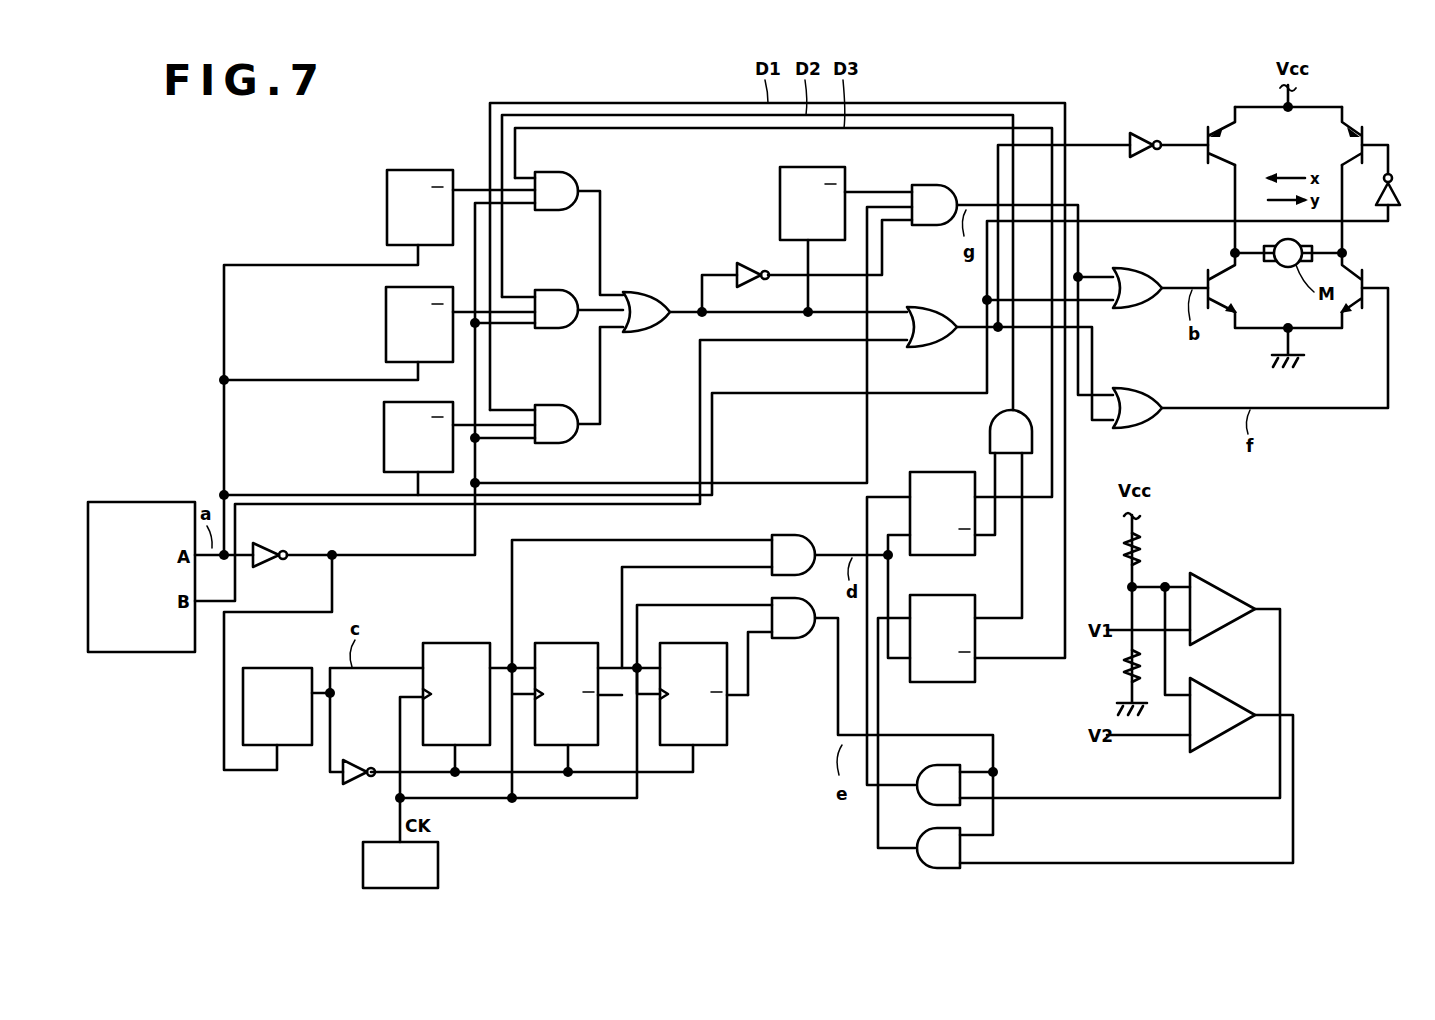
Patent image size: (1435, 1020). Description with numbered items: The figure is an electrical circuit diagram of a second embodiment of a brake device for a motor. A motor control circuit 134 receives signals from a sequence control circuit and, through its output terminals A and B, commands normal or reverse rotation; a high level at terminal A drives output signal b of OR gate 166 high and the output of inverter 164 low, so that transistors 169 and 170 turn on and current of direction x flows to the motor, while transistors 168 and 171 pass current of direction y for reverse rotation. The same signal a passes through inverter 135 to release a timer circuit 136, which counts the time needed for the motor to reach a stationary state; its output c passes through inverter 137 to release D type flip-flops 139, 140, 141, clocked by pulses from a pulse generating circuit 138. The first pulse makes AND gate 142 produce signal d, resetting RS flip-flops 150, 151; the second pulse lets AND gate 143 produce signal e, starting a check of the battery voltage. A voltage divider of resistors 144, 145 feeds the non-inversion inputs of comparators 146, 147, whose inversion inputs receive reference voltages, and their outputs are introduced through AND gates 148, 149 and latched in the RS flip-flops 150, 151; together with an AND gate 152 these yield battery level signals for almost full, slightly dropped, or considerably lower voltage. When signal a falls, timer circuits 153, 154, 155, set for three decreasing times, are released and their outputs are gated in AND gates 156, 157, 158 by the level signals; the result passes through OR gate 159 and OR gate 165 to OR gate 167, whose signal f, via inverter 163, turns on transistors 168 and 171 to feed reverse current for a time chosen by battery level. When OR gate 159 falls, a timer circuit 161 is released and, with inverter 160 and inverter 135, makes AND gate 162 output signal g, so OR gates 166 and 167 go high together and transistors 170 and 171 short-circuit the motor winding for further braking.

The motor control circuit 134 is at (113, 502).
The inverter 135 is at (281, 556).
The timer circuit 136 is at (278, 668).
The inverter 137 is at (366, 752).
The pulse generating circuit 138 is at (438, 855).
The D type flip-flop 139 is at (466, 643).
The D type flip-flop 140 is at (580, 643).
The D type flip-flop 141 is at (727, 745).
The AND gate 142 is at (806, 537).
The AND gate 143 is at (800, 638).
The resistor 144 is at (1125, 548).
The resistor 145 is at (1124, 659).
The comparator 146 is at (1237, 596).
The comparator 147 is at (1237, 698).
The AND gate 148 is at (919, 765).
The AND gate 149 is at (919, 827).
The RS flip-flop 150 is at (965, 555).
The RS flip-flop 151 is at (965, 682).
The AND gate 152 is at (989, 423).
The timer circuit 153 is at (387, 187).
The timer circuit 154 is at (386, 305).
The timer circuit 155 is at (384, 420).
The AND gate 156 is at (555, 210).
The AND gate 157 is at (555, 328).
The AND gate 158 is at (555, 443).
The OR gate 159 is at (635, 295).
The inverter 160 is at (746, 263).
The timer circuit 161 is at (845, 184).
The AND gate 162 is at (930, 185).
The inverter 163 is at (1147, 133).
The inverter 164 is at (1402, 192).
The OR gate 165 is at (928, 307).
The OR gate 166 is at (1144, 272).
The OR gate 167 is at (1144, 392).
The transistor 168 is at (1215, 142).
The transistor 169 is at (1356, 130).
The transistor 170 is at (1222, 286).
The transistor 171 is at (1356, 280).